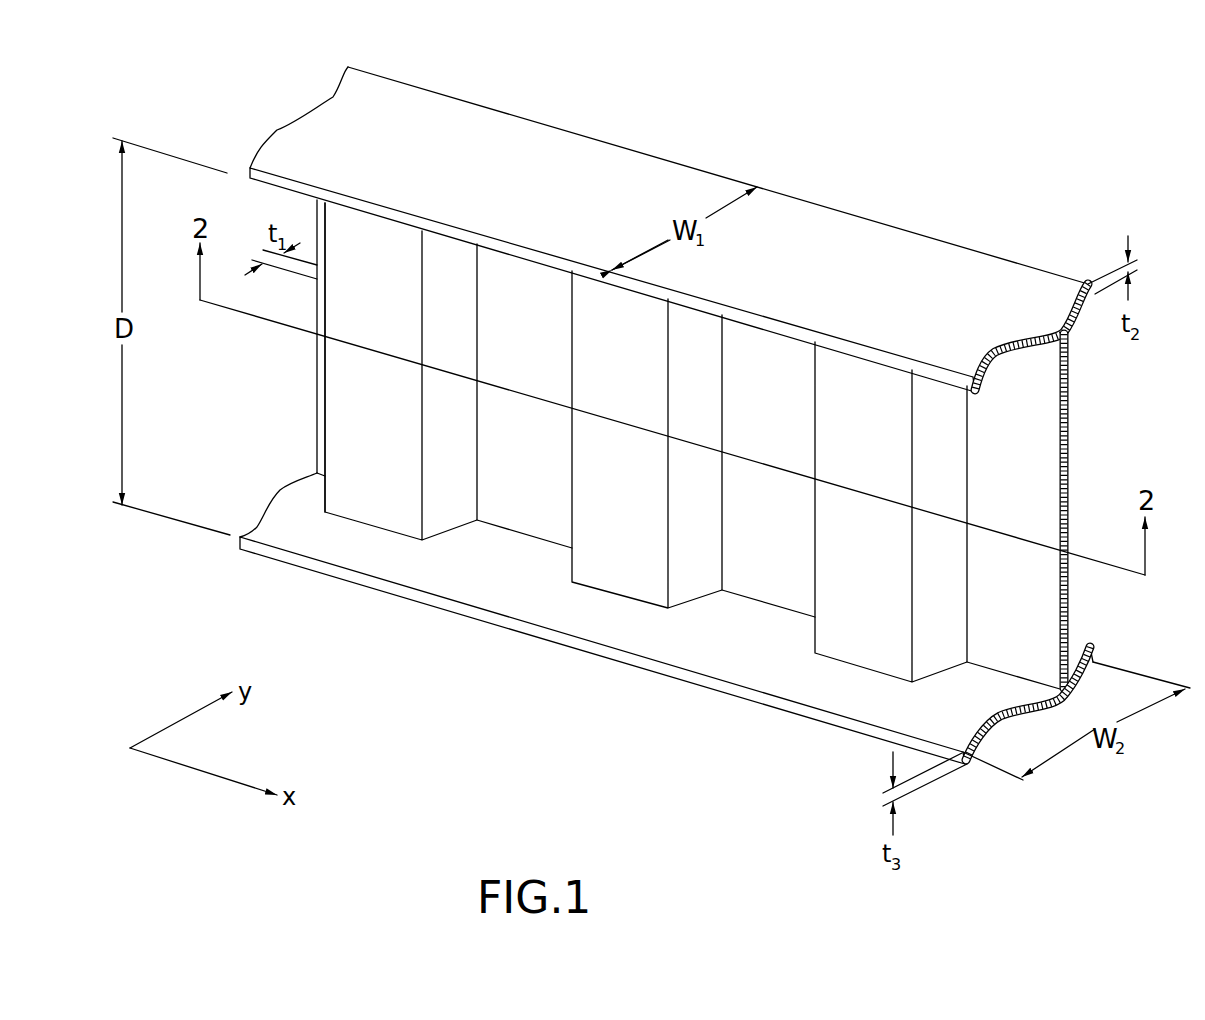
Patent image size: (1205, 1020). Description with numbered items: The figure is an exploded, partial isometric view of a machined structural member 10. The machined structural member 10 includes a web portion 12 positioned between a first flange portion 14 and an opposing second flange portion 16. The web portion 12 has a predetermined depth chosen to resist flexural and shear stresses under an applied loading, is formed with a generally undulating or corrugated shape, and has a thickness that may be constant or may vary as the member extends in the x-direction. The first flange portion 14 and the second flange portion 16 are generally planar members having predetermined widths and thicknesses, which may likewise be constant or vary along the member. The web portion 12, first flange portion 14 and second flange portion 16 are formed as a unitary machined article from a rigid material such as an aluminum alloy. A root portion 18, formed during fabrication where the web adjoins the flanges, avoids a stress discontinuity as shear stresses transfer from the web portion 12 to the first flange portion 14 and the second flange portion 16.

The machined structural member 10 is at (1061, 124).
The web portion 12 is at (317, 405).
The first flange portion 14 is at (307, 127).
The second flange portion 16 is at (238, 541).
The root portion 18 is at (762, 605).